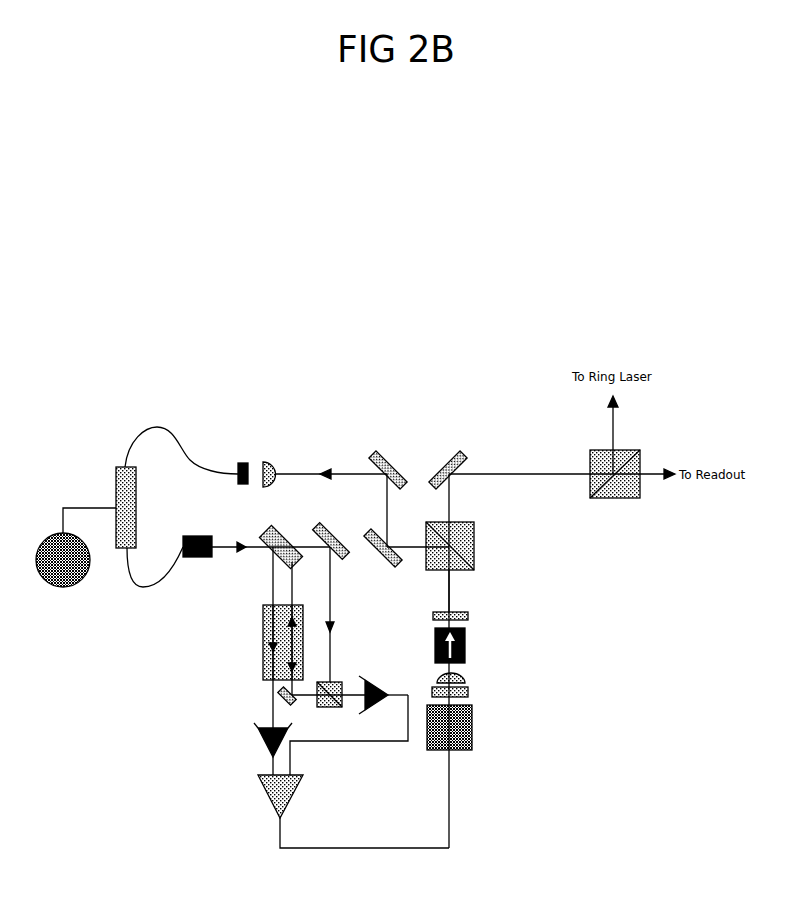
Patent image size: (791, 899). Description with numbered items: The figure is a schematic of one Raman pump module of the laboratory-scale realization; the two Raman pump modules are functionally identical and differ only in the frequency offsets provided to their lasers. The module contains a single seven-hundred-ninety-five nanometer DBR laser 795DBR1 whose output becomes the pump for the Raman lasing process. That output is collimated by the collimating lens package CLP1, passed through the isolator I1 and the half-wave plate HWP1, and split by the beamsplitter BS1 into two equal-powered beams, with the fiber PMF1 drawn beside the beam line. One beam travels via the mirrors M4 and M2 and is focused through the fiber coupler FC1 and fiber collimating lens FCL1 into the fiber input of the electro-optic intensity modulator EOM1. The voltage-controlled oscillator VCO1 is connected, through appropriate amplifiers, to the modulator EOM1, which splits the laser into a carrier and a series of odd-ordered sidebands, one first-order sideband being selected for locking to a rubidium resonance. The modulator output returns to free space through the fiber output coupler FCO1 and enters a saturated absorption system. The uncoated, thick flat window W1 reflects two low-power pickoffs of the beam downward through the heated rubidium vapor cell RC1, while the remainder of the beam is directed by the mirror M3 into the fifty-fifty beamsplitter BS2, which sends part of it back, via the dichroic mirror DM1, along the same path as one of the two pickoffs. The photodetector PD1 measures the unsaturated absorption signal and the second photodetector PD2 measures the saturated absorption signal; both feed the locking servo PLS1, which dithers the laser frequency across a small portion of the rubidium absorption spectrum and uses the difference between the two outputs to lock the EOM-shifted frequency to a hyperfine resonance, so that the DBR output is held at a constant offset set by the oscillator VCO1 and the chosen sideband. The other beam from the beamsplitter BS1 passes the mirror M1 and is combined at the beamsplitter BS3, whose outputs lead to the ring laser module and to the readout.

The voltage-controlled oscillator VCO1 is at (76, 558).
The electro-optic intensity modulator EOM1 is at (149, 507).
The fiber coupler FC1 is at (242, 464).
The fiber collimating lens FCL1 is at (274, 466).
The fiber coupler output FCO1 is at (198, 558).
The uncoated thick flat window W1 is at (280, 538).
The mirror 1 M1 is at (383, 558).
The mirror 2 M2 is at (388, 464).
The mirror 3 M3 is at (335, 554).
The mirror 4 M4 is at (448, 464).
The beamsplitter BS1 is at (456, 557).
The 50/50 beamsplitter BS2 is at (329, 703).
The beam splitter 3 BS3 is at (615, 485).
The polarization maintaining fiber PMF1 is at (503, 580).
The half wave plate HWP1 is at (430, 617).
The isolator I1 is at (461, 645).
The collimating lens package CLP1 is at (467, 685).
The 795 nm DBR laser 795DBR1 is at (432, 737).
The heated rubidium vapor cell RC1 is at (272, 642).
The dichroic mirror DM1 is at (293, 706).
The photodetector PD1 is at (264, 740).
The photodetector PD2 is at (375, 689).
The locking servo PLS1 is at (292, 796).